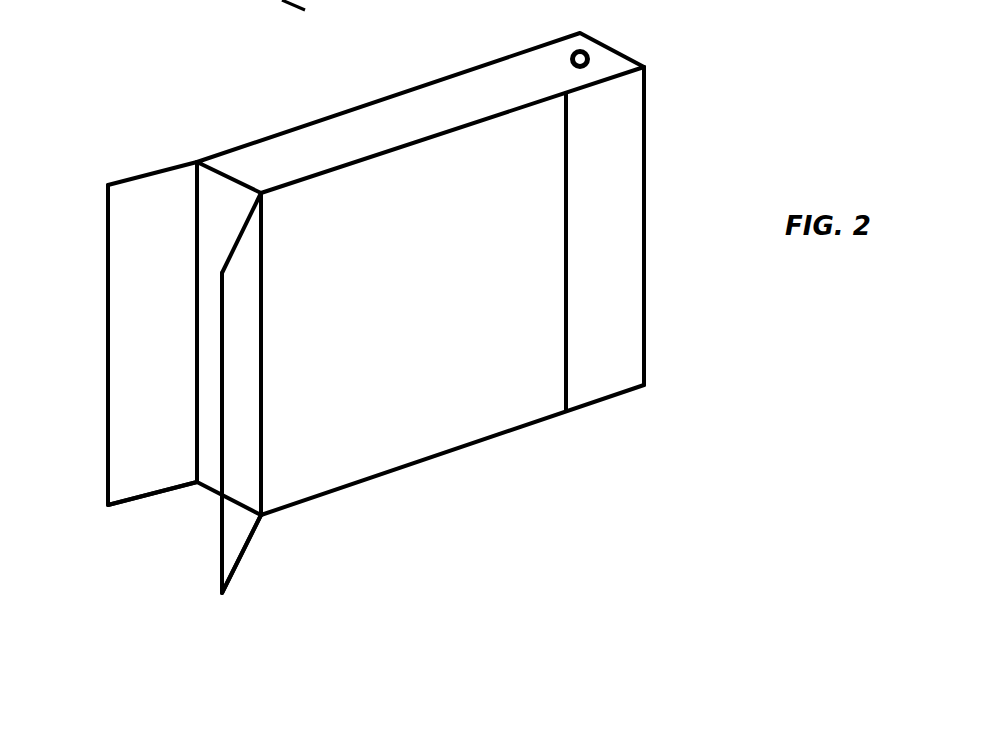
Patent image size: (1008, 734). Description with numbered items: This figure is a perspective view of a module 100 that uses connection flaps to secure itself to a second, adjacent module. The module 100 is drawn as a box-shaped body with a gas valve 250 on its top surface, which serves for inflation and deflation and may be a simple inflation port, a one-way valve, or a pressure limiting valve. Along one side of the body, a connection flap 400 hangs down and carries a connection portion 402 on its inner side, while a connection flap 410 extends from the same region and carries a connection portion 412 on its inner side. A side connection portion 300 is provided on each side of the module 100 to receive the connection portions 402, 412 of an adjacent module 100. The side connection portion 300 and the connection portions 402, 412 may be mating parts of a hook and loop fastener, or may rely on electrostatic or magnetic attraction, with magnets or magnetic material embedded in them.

The module 100 is at (685, 155).
The gas valve 250 is at (585, 57).
The side connection portion 300 is at (620, 273).
The connection flap 400 is at (235, 497).
The connection portion 402 is at (222, 538).
The connection flap 410 is at (142, 202).
The connection portion 412 is at (133, 337).